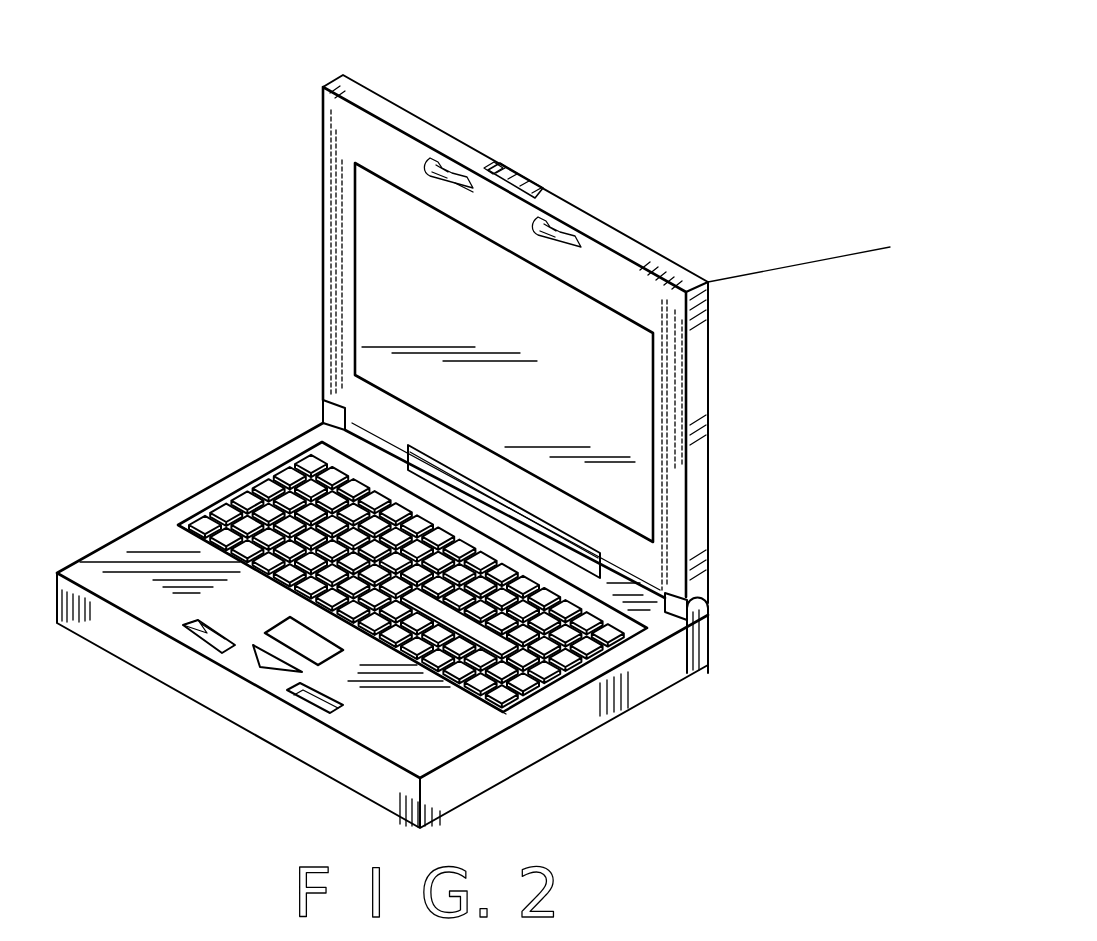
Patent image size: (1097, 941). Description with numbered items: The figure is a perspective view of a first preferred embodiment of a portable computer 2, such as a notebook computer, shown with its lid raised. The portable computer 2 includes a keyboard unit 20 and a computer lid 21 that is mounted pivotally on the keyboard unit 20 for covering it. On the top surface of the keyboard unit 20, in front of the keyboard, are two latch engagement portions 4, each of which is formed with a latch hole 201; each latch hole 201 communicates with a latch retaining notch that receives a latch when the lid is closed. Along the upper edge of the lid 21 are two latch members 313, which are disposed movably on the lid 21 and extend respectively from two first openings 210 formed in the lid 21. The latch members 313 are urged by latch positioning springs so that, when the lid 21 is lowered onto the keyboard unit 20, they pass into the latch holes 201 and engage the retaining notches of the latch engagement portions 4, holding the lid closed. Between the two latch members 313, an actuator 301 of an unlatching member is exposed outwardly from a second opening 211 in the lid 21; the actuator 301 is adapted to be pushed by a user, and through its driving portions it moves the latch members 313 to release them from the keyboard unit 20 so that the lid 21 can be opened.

The portable computer 2 is at (230, 333).
The keyboard unit 20 is at (137, 543).
The computer lid 21 is at (677, 460).
The latch hole 201 is at (300, 693).
The first opening 210 is at (467, 188).
The second opening 211 is at (490, 173).
The actuator 301 is at (527, 173).
The latch member 313 is at (435, 160).
The latch engagement portion 4 is at (190, 620).